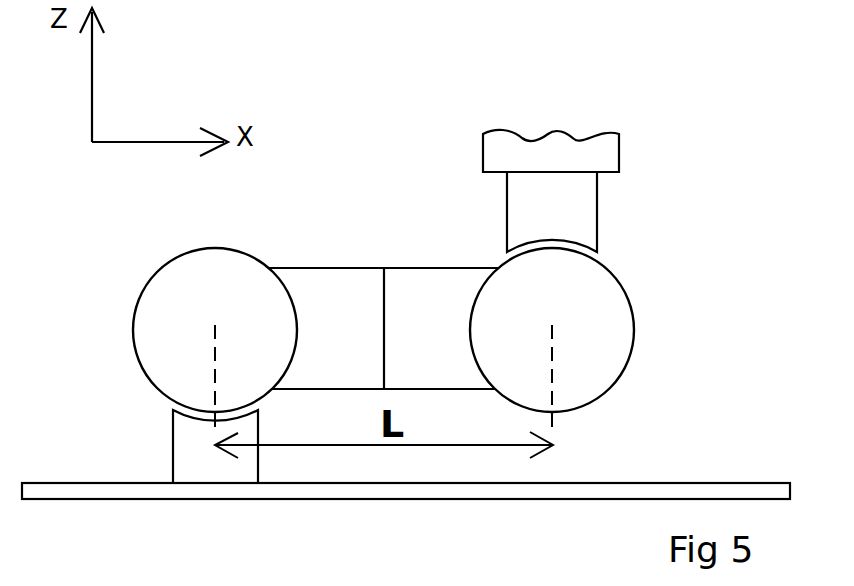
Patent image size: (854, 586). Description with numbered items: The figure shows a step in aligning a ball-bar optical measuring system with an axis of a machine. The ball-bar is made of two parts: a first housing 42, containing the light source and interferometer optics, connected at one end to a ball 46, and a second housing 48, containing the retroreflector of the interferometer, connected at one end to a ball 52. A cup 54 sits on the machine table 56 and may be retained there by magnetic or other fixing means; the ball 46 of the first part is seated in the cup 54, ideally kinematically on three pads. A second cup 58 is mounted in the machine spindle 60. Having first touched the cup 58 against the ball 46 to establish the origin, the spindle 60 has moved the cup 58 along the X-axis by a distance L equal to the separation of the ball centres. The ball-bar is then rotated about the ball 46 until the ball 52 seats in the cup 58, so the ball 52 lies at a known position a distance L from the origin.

The housing 42 is at (323, 275).
The ball 46 is at (186, 267).
The housing 48 is at (422, 300).
The ball 52 is at (610, 333).
The cup 54 is at (188, 447).
The machine table 56 is at (610, 490).
The second cup 58 is at (520, 185).
The machine spindle 60 is at (597, 160).